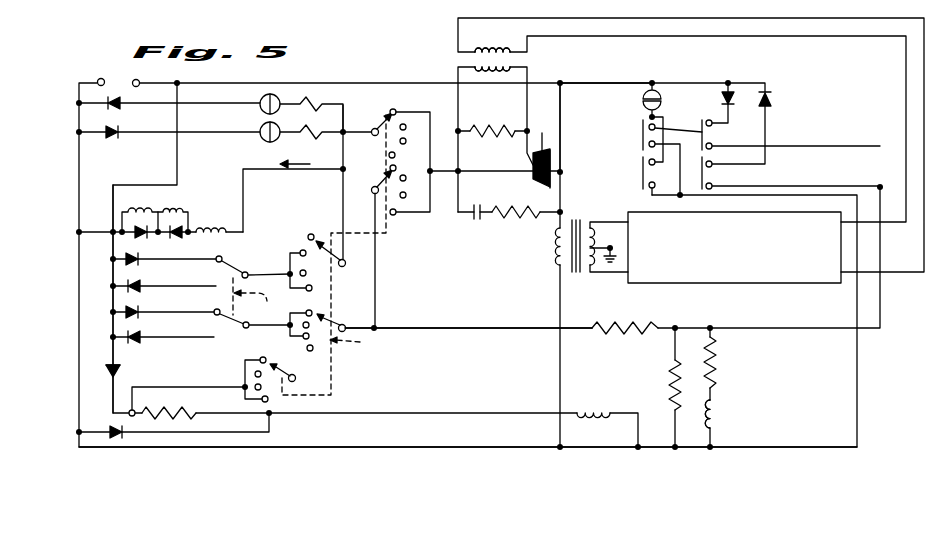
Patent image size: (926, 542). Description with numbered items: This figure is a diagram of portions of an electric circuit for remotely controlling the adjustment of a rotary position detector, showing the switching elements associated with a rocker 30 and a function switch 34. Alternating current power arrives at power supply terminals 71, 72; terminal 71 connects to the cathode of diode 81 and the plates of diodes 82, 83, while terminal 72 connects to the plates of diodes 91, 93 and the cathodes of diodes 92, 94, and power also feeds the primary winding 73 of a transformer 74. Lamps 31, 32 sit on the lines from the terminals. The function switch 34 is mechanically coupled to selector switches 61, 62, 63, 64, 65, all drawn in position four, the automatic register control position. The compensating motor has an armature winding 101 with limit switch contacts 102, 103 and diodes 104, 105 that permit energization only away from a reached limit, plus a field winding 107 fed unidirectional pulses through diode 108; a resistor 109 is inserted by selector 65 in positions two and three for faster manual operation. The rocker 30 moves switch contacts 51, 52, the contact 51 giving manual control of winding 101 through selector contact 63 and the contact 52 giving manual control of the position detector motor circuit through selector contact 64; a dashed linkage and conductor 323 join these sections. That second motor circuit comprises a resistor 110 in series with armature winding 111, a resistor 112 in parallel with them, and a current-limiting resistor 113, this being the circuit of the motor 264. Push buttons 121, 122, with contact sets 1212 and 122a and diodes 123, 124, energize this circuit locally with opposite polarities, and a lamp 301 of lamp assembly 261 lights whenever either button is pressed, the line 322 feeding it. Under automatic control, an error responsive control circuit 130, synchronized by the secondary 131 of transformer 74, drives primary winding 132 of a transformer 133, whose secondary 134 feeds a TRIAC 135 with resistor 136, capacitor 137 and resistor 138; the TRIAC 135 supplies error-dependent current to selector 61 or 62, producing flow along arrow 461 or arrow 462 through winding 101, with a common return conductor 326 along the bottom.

The power supply terminal 71 is at (98, 80).
The power supply terminal 72 is at (140, 83).
The diode 81 is at (117, 108).
The diode 82 is at (114, 139).
The indicator lamp 31 is at (282, 98).
The indicator lamp 32 is at (260, 129).
The arrow 461 is at (300, 163).
The selector switch 61 is at (379, 123).
The selector switch 62 is at (377, 178).
The selector contact 63 is at (329, 242).
The selector contact 64 is at (336, 321).
The selector switch 65 is at (282, 365).
The function switch 34 is at (355, 342).
The conductor 323 is at (431, 331).
The rocker 30 is at (251, 298).
The switch contact 51 is at (240, 269).
The switch contact 52 is at (229, 329).
The arrow 462 is at (103, 223).
The limit switch contact 102 is at (140, 203).
The limit switch contact 103 is at (179, 210).
The armature winding 101 is at (213, 228).
The diode 104 is at (138, 239).
The diode 105 is at (182, 238).
The diode 91 is at (137, 264).
The diode 92 is at (137, 290).
The diode 93 is at (137, 316).
The diode 94 is at (137, 342).
The diode 108 is at (122, 372).
The resistor 109 is at (186, 411).
The diode 83 is at (110, 429).
The primary winding 132 is at (484, 48).
The transformer 133 is at (519, 60).
The secondary 134 is at (489, 72).
The TRIAC 135 is at (543, 148).
The resistor 136 is at (480, 135).
The capacitor 137 is at (474, 221).
The resistor 138 is at (522, 219).
The primary winding 73 is at (556, 252).
The transformer 74 is at (567, 291).
The secondary 131 is at (591, 222).
The error responsive control circuit 130 is at (744, 284).
The lamp 301 is at (643, 96).
The lamp assembly 261 is at (638, 113).
The conductor 322 is at (585, 80).
The push button 121 is at (642, 130).
The push button 122 is at (642, 168).
The relay contacts 1212 is at (700, 125).
The contact 122a is at (716, 184).
The diode 123 is at (724, 88).
The diode 124 is at (773, 99).
The resistor 113 is at (631, 321).
The resistor 112 is at (670, 369).
The resistor 110 is at (718, 360).
The armature winding 111 is at (717, 419).
The motor 264 is at (730, 394).
The field winding 107 is at (590, 409).
The common conductor 326 is at (655, 449).